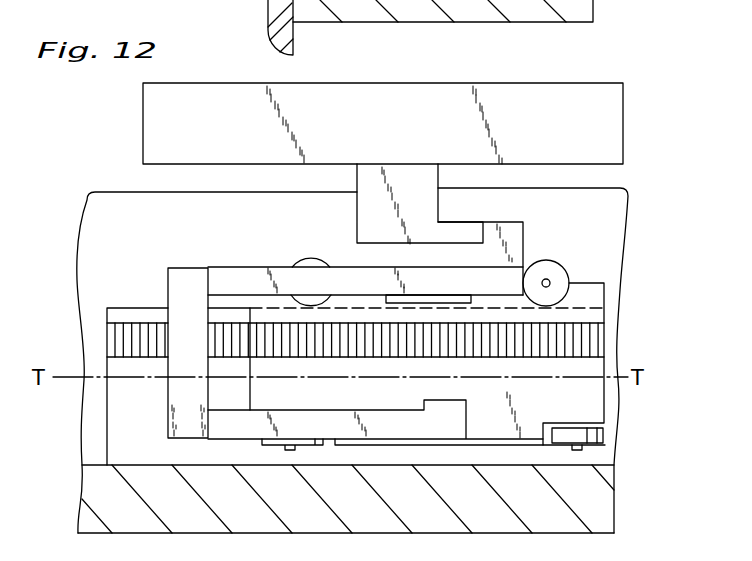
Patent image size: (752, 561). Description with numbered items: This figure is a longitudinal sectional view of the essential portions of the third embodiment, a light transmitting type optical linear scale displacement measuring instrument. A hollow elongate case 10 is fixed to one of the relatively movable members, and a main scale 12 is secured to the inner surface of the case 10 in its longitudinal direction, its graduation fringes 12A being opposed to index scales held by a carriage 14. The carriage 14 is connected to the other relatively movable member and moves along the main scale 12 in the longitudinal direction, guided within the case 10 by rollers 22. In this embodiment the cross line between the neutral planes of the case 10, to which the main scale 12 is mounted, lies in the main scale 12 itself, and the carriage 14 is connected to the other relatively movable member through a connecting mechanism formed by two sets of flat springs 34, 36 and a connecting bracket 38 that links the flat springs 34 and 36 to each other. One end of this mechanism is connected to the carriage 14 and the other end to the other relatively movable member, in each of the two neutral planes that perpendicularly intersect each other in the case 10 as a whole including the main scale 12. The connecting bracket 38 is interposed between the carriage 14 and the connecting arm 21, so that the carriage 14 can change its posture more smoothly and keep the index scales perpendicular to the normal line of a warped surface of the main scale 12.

The case 10 is at (90, 497).
The main scale 12 is at (150, 305).
The graduation fringes 12A is at (125, 330).
The carriage 14 is at (587, 275).
The connecting arm 21 is at (440, 210).
The rollers 22 is at (548, 260).
The flat springs 34 is at (248, 266).
The flat springs 36 is at (242, 430).
The connecting bracket 38 is at (168, 413).